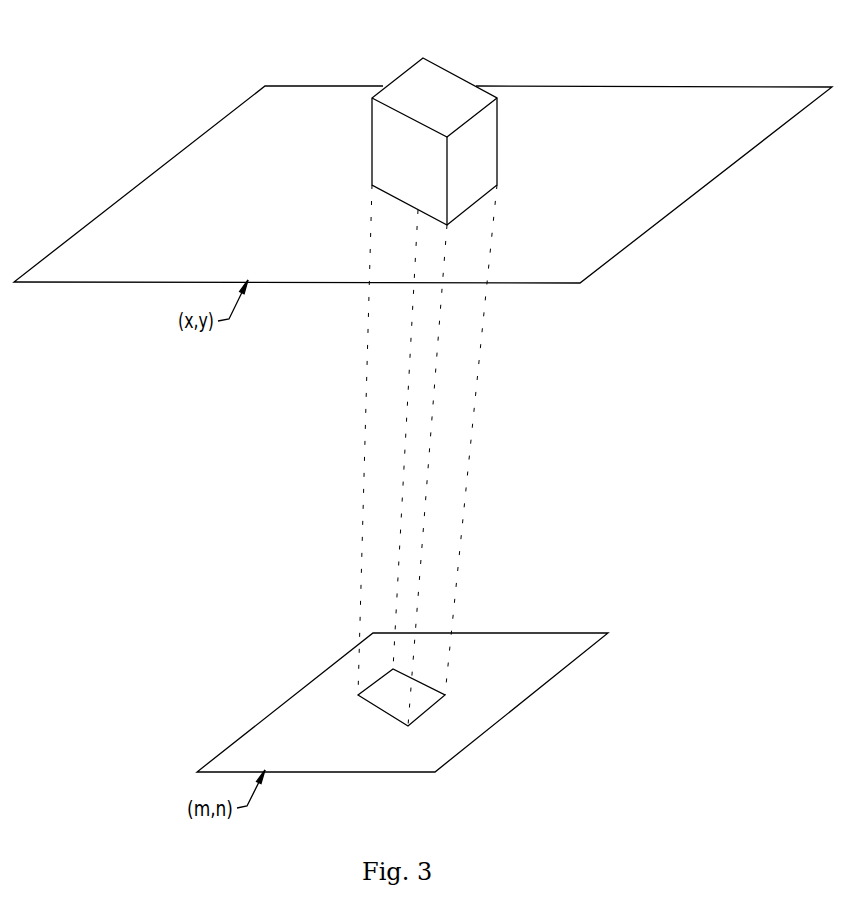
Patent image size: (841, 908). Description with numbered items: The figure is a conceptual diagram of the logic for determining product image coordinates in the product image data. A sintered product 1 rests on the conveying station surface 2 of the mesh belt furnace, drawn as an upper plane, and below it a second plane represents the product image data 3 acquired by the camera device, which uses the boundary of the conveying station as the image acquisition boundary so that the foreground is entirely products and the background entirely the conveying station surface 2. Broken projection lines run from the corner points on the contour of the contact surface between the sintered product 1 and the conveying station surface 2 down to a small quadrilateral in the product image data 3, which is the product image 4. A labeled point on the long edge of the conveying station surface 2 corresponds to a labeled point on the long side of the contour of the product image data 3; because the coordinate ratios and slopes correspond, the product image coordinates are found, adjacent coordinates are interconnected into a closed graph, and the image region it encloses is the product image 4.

The sintered product 1 is at (452, 100).
The conveying station surface 2 is at (662, 120).
The product image data 3 is at (517, 682).
The product image 4 is at (397, 702).